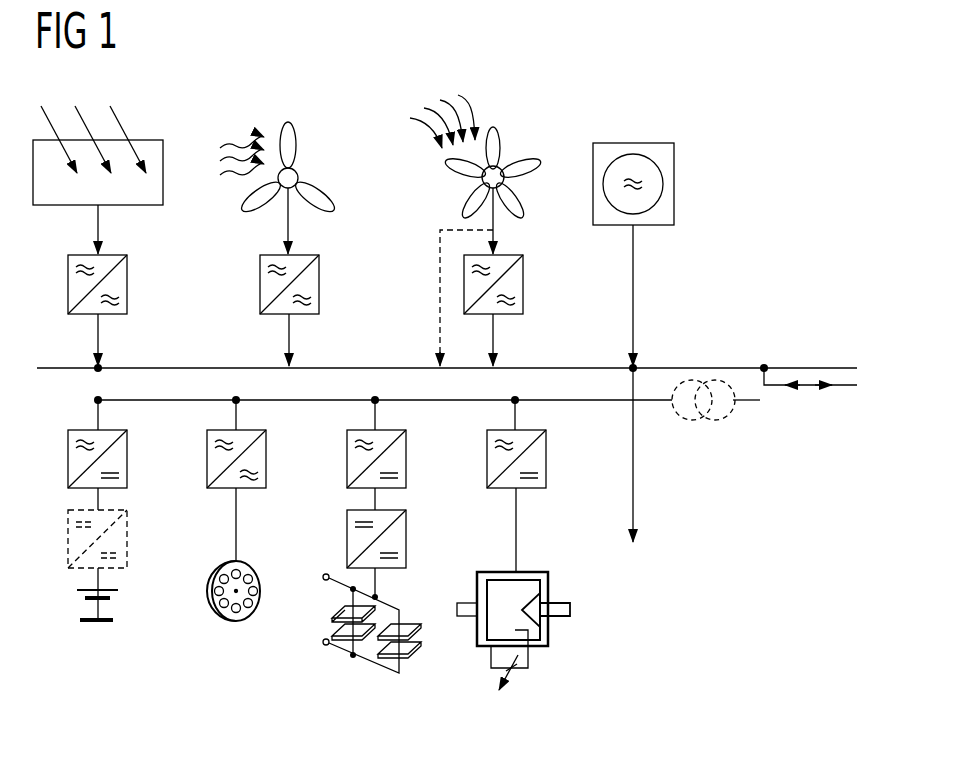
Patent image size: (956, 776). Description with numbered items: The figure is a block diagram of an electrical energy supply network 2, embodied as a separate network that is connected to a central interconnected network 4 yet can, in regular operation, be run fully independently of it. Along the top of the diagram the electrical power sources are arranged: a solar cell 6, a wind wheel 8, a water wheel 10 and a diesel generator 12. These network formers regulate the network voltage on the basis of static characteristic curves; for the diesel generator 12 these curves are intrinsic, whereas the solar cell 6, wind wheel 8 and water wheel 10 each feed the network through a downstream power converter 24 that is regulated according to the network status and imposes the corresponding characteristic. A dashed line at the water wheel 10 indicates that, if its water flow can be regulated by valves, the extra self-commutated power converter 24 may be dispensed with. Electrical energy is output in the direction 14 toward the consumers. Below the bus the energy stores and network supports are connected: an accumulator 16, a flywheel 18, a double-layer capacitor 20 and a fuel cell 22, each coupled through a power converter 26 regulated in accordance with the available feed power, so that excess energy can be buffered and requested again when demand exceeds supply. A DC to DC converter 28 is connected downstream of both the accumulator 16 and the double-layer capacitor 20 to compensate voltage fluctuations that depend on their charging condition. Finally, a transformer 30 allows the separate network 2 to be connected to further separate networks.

The electrical energy supply network 2 is at (721, 98).
The central interconnected network 4 is at (810, 387).
The solar cell 6 is at (150, 140).
The wind wheel 8 is at (303, 166).
The water wheel 10 is at (502, 166).
The diesel generator 12 is at (635, 143).
The direction of output to consumers 14 is at (636, 497).
The accumulator 16 is at (106, 591).
The flywheel 18 is at (237, 621).
The double-layer capacitor 20 is at (379, 673).
The fuel cell 22 is at (548, 588).
The power converter 24 is at (127, 284).
The power converter 26 is at (127, 458).
The DC to DC converter 28 is at (127, 543).
The transformer 30 is at (712, 422).